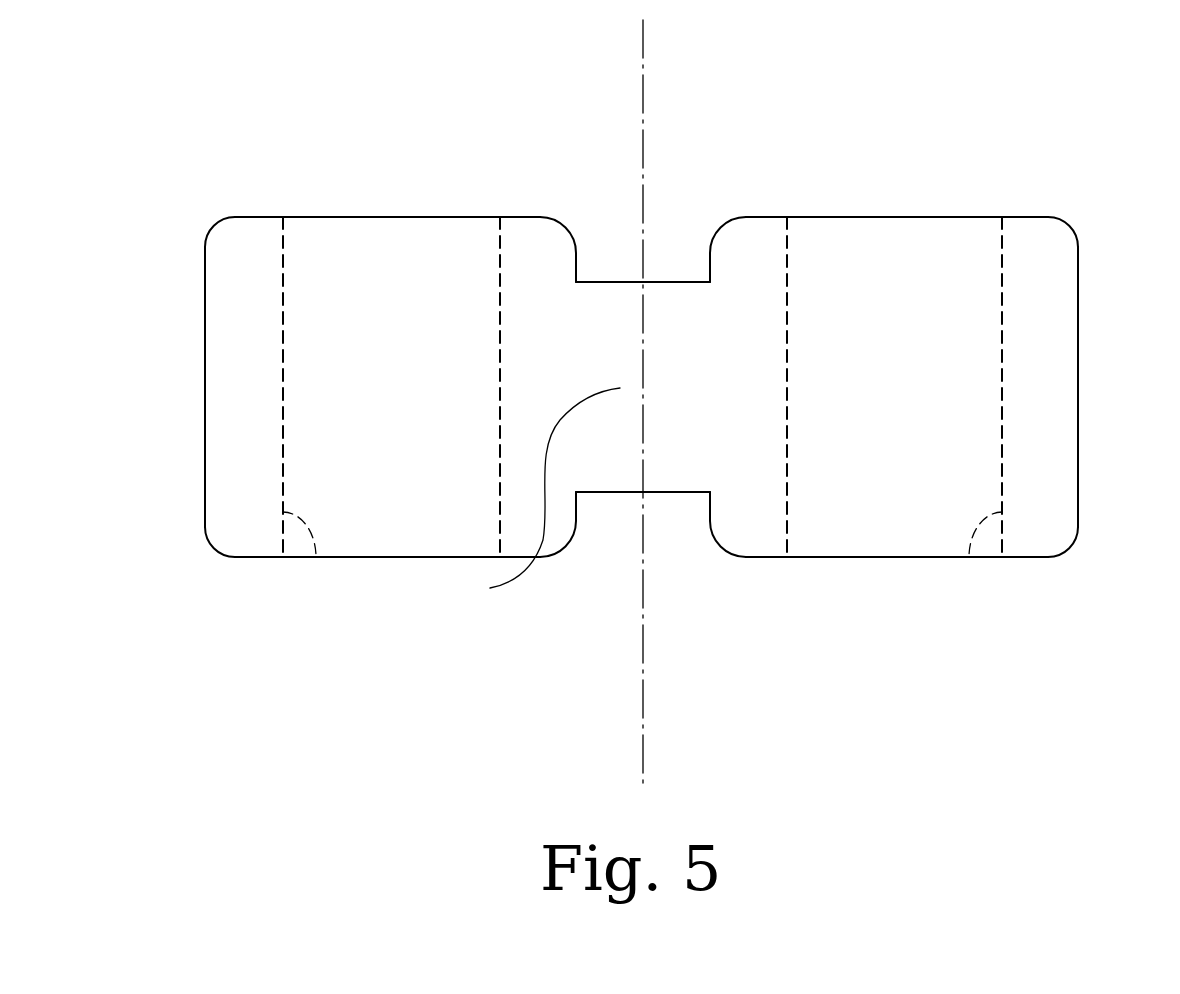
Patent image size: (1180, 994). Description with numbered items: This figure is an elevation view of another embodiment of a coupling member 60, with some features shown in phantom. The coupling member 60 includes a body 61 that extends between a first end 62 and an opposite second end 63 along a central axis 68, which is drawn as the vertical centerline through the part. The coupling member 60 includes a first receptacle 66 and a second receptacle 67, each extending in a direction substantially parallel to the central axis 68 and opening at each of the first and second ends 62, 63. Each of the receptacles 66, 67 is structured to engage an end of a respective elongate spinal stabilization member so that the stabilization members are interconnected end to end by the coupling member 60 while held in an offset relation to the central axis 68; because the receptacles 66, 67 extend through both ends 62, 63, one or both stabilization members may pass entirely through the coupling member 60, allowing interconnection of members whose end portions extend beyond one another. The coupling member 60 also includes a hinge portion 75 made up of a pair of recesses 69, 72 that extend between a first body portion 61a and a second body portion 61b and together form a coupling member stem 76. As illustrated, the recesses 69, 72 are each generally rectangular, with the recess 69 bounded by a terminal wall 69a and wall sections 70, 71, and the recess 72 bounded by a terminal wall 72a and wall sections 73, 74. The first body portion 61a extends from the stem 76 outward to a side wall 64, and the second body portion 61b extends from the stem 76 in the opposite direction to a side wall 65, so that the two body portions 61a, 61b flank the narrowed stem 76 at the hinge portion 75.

The coupling member 60 is at (290, 118).
The body 61 is at (258, 217).
The first body portion 61a is at (222, 365).
The second body portion 61b is at (1058, 244).
The first end 62 is at (943, 217).
The second end 63 is at (878, 558).
The side wall 64 is at (205, 418).
The side wall 65 is at (1080, 303).
The first receptacle 66 is at (308, 558).
The second receptacle 67 is at (975, 558).
The central axis 68 is at (641, 95).
The recess 69 is at (622, 188).
The terminal wall 69a is at (680, 284).
The wall section 70 is at (697, 245).
The wall section 71 is at (582, 245).
The recess 72 is at (665, 587).
The terminal wall 72a is at (688, 490).
The wall section 73 is at (697, 512).
The wall section 74 is at (582, 512).
The hinge portion 75 is at (603, 645).
The coupling member stem 76 is at (536, 496).